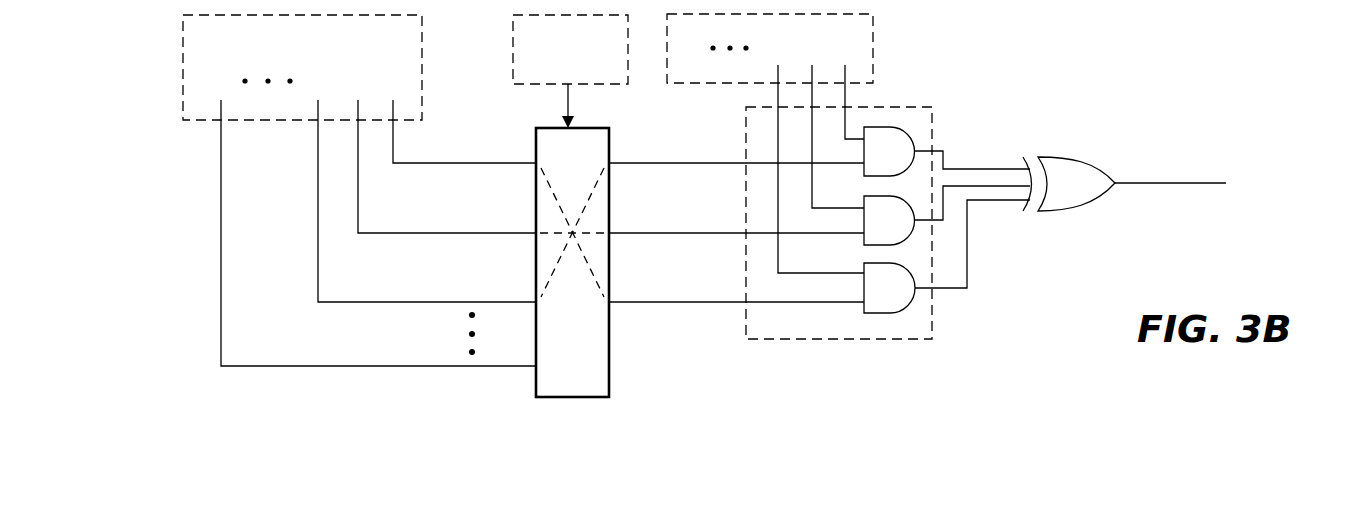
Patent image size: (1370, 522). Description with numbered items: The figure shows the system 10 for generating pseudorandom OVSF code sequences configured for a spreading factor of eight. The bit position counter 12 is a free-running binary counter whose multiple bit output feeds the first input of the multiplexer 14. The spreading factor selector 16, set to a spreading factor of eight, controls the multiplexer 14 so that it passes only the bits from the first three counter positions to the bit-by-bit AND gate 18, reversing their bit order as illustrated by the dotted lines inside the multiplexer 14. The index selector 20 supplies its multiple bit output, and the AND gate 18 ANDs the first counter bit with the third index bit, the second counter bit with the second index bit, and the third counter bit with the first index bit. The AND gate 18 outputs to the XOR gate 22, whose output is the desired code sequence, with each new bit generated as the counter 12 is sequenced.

The system 10 is at (149, 33).
The bit position counter 12 is at (422, 110).
The multiplexer 14 is at (610, 352).
The spreading factor selector 16 is at (602, 84).
The bit-by-bit AND gate 18 is at (933, 110).
The index selector 20 is at (873, 50).
The XOR gate 22 is at (1088, 158).